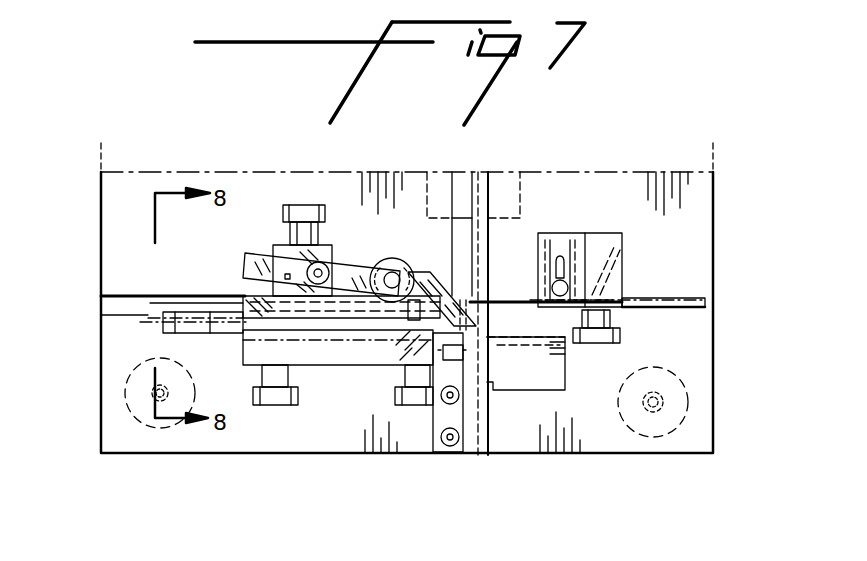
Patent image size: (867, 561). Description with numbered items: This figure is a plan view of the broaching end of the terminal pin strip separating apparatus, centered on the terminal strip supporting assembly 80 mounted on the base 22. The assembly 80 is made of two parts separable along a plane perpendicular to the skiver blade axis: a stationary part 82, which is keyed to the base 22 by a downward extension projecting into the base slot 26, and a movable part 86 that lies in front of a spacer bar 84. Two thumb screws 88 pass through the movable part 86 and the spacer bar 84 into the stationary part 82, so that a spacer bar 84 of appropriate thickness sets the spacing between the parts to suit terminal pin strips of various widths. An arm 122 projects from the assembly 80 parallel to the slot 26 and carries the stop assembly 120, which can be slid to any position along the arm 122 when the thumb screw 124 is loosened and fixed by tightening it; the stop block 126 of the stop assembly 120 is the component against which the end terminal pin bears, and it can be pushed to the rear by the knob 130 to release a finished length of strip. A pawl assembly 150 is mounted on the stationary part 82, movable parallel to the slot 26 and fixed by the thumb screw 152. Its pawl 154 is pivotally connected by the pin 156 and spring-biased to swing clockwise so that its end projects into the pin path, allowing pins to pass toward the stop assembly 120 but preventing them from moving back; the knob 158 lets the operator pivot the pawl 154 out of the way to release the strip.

The base 22 is at (525, 437).
The base slot 26 is at (113, 305).
The terminal strip supporting assembly 80 is at (308, 423).
The stationary part 82 is at (253, 307).
The spacer bar 84 is at (170, 335).
The movable part 86 is at (332, 357).
The thumb screws 88 is at (270, 400).
The stop assembly 120 is at (628, 190).
The arm 122 is at (640, 300).
The thumb screw 124 is at (612, 347).
The stop block 126 is at (560, 357).
The knob 130 is at (565, 268).
The pawl assembly 150 is at (345, 205).
The thumb screw 152 is at (302, 205).
The pawl 154 is at (365, 262).
The pin 156 is at (287, 253).
The knob 158 is at (430, 258).